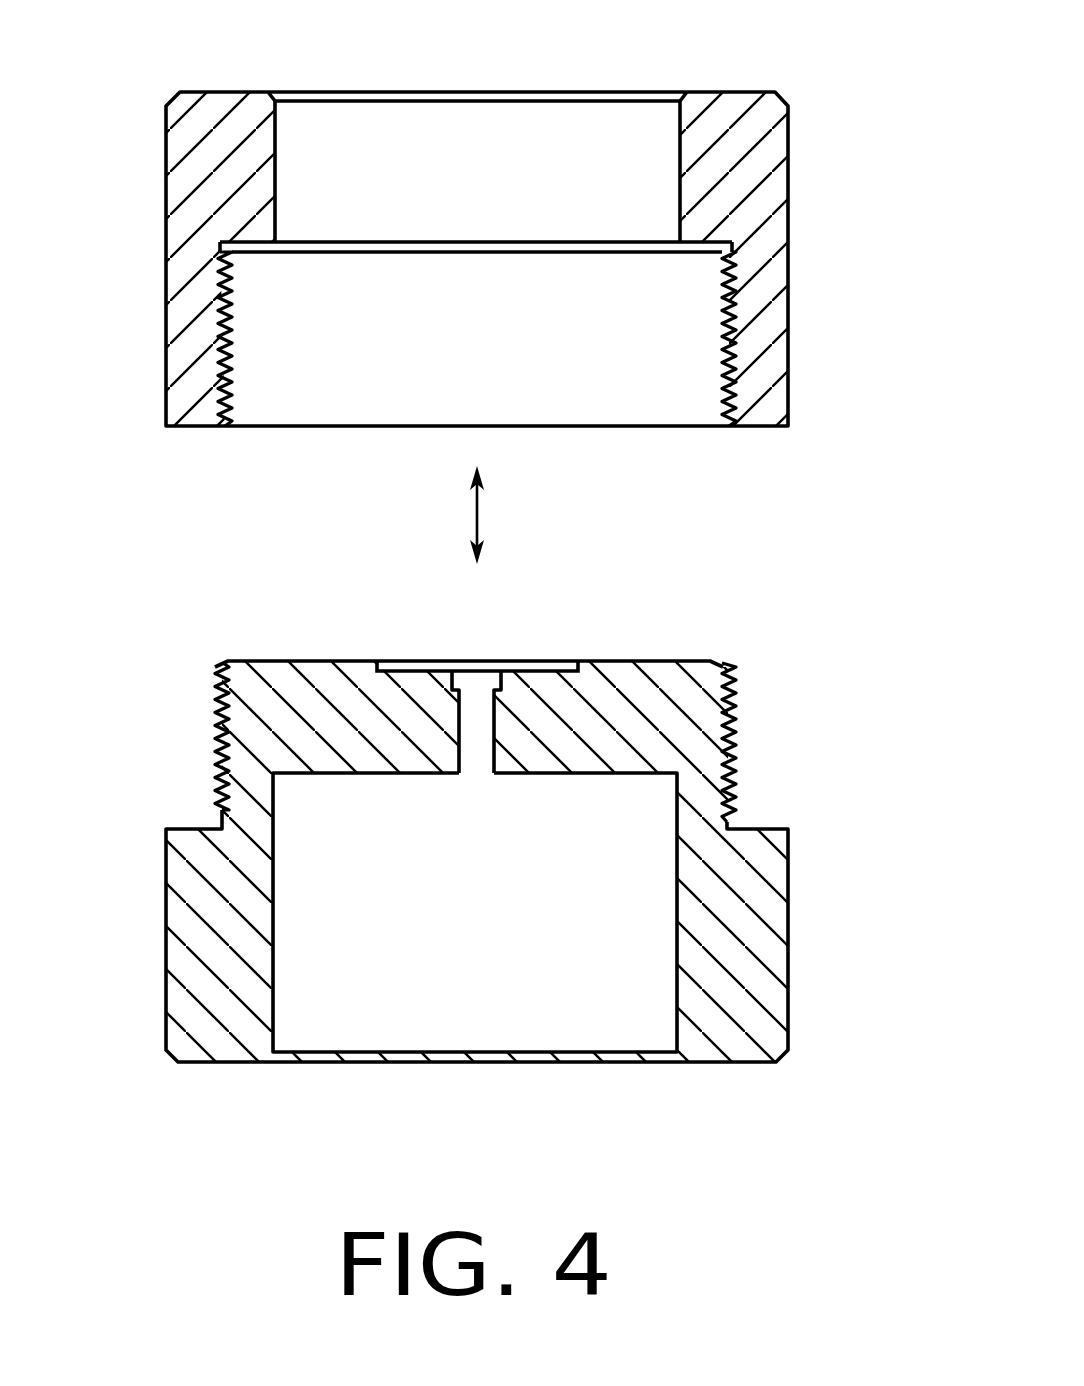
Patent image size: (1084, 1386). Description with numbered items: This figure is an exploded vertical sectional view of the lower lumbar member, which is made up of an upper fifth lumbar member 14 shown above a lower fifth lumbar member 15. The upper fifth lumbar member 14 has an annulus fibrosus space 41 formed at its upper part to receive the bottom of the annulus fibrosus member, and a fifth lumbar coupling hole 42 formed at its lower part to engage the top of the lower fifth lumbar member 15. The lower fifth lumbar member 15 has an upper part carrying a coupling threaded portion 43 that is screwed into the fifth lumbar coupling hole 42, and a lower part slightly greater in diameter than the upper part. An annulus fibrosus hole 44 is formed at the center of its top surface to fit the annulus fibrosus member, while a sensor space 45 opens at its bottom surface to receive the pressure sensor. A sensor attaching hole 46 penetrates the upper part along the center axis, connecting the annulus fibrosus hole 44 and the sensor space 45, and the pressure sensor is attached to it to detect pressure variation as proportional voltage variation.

The upper fifth lumbar member 14 is at (692, 71).
The lower fifth lumbar member 15 is at (756, 700).
The annulus fibrosus space 41 is at (655, 168).
The fifth lumbar coupling hole 42 is at (693, 335).
The coupling threaded portion 43 is at (725, 763).
The annulus fibrosus hole 44 is at (562, 660).
The sensor space 45 is at (588, 1015).
The sensor attaching hole 46 is at (476, 762).